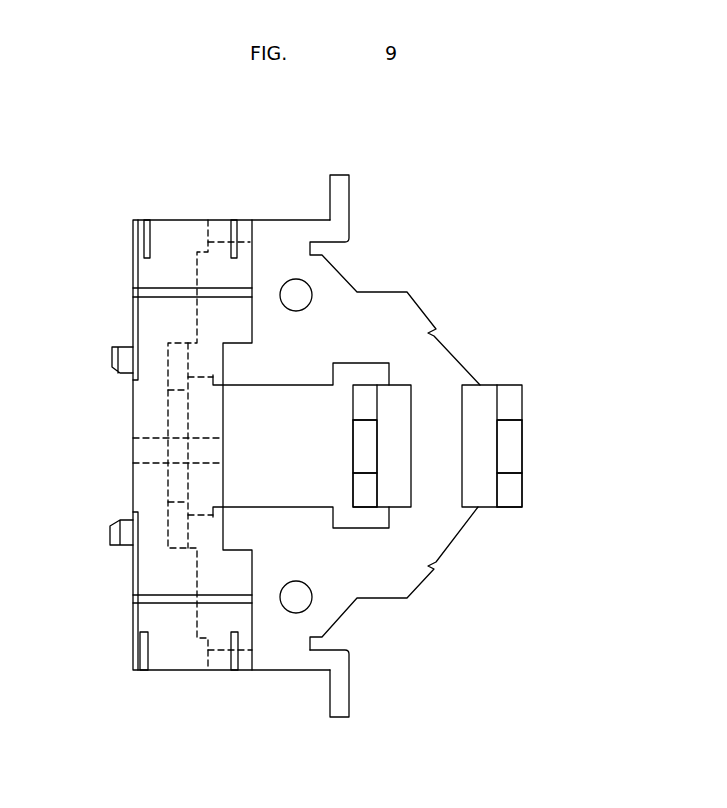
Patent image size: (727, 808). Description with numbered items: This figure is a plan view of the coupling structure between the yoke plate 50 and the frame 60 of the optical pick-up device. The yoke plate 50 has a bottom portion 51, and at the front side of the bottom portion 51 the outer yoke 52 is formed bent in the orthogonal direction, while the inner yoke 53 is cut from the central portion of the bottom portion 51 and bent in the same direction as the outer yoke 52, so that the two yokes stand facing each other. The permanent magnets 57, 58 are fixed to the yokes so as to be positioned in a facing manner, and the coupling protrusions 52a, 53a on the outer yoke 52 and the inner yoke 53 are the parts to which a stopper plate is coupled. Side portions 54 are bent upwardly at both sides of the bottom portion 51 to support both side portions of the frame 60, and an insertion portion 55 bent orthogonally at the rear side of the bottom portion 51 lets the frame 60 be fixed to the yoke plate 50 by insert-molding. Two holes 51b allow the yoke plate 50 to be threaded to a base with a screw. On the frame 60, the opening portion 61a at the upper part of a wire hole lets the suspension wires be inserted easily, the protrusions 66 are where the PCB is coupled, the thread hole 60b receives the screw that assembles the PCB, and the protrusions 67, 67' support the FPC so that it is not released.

The yoke plate 50 is at (440, 298).
The bottom portion 51 is at (380, 298).
The holes 51b is at (294, 290).
The outer yoke 52 is at (515, 495).
The coupling protrusion 52a is at (515, 438).
The inner yoke 53 is at (365, 500).
The coupling protrusion 53a is at (367, 450).
The side portions 54 is at (295, 662).
The insertion portion 55 is at (168, 410).
The permanent magnet 57 is at (485, 392).
The permanent magnet 58 is at (398, 393).
The frame 60 is at (157, 223).
The thread hole 60b is at (133, 450).
The opening portion 61a is at (185, 292).
The protrusions 66 is at (117, 355).
The protrusions 67 is at (91, 651).
The slit 67' is at (242, 698).